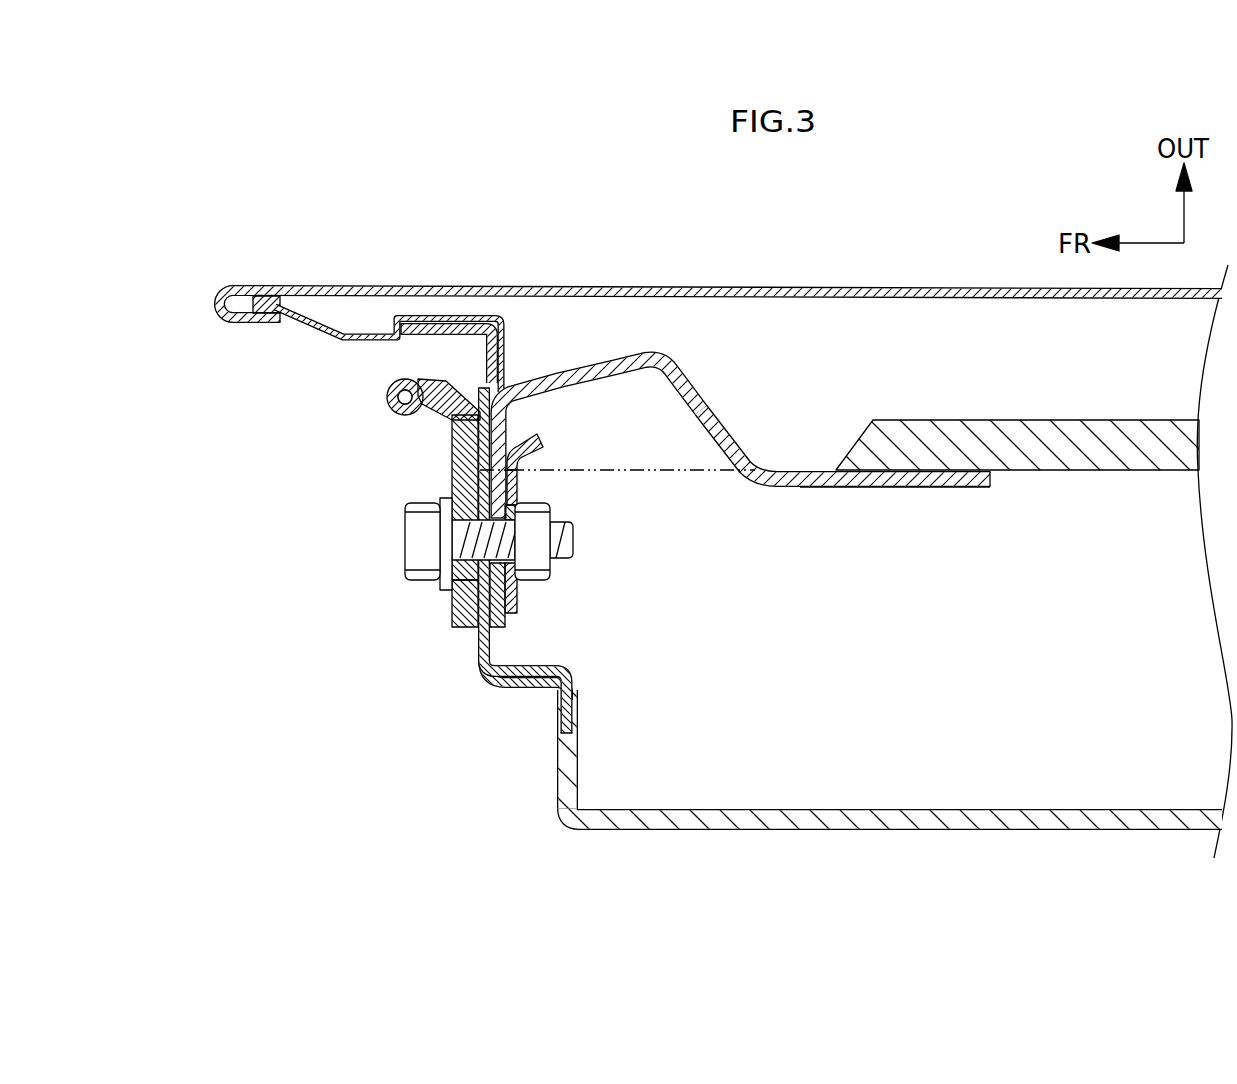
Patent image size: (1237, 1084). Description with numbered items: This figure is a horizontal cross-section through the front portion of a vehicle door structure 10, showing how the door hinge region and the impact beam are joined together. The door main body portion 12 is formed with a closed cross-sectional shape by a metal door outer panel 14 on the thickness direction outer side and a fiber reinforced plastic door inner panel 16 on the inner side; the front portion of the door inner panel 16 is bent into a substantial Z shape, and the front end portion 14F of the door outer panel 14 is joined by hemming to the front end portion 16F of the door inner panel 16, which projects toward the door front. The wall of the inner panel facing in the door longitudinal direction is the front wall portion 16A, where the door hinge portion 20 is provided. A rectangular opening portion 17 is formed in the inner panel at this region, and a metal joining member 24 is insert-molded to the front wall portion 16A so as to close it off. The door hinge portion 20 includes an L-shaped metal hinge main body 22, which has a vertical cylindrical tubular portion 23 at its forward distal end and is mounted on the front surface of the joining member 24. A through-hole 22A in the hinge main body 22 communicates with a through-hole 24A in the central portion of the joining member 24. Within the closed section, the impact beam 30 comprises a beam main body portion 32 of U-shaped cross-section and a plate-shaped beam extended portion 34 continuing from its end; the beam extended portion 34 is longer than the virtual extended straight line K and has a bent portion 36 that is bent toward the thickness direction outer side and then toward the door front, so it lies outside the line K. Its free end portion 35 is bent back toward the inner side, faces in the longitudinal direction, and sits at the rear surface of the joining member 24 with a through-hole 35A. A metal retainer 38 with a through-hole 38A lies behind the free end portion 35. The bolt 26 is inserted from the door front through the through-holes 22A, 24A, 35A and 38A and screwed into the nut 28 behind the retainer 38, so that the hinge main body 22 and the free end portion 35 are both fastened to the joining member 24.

The vehicle door structure 10 is at (455, 541).
The door main body portion 12 is at (728, 274).
The door outer panel 14 is at (452, 284).
The front end portion 14F is at (250, 328).
The door inner panel 16 is at (722, 836).
The front wall portion 16A is at (557, 757).
The front end portion 16F is at (267, 286).
The opening portion 17 is at (497, 642).
The door hinge portion 20 is at (353, 541).
The hinge main body 22 is at (452, 455).
The through-hole 22A is at (453, 588).
The cylindrical tubular portion 23 is at (386, 397).
The joining member 24 is at (477, 645).
The through-hole 24A is at (520, 505).
The bolt 26 is at (405, 508).
The nut 28 is at (549, 506).
The impact beam 30 is at (1067, 476).
The beam main body portion 32 is at (1078, 424).
The beam extended portion 34 is at (724, 410).
The free end portion 35 is at (503, 627).
The through-hole 35A is at (518, 568).
The bent portion 36 is at (655, 352).
The retainer 38 is at (540, 443).
The through-hole 38A is at (520, 515).
The virtual extended straight line K is at (690, 480).